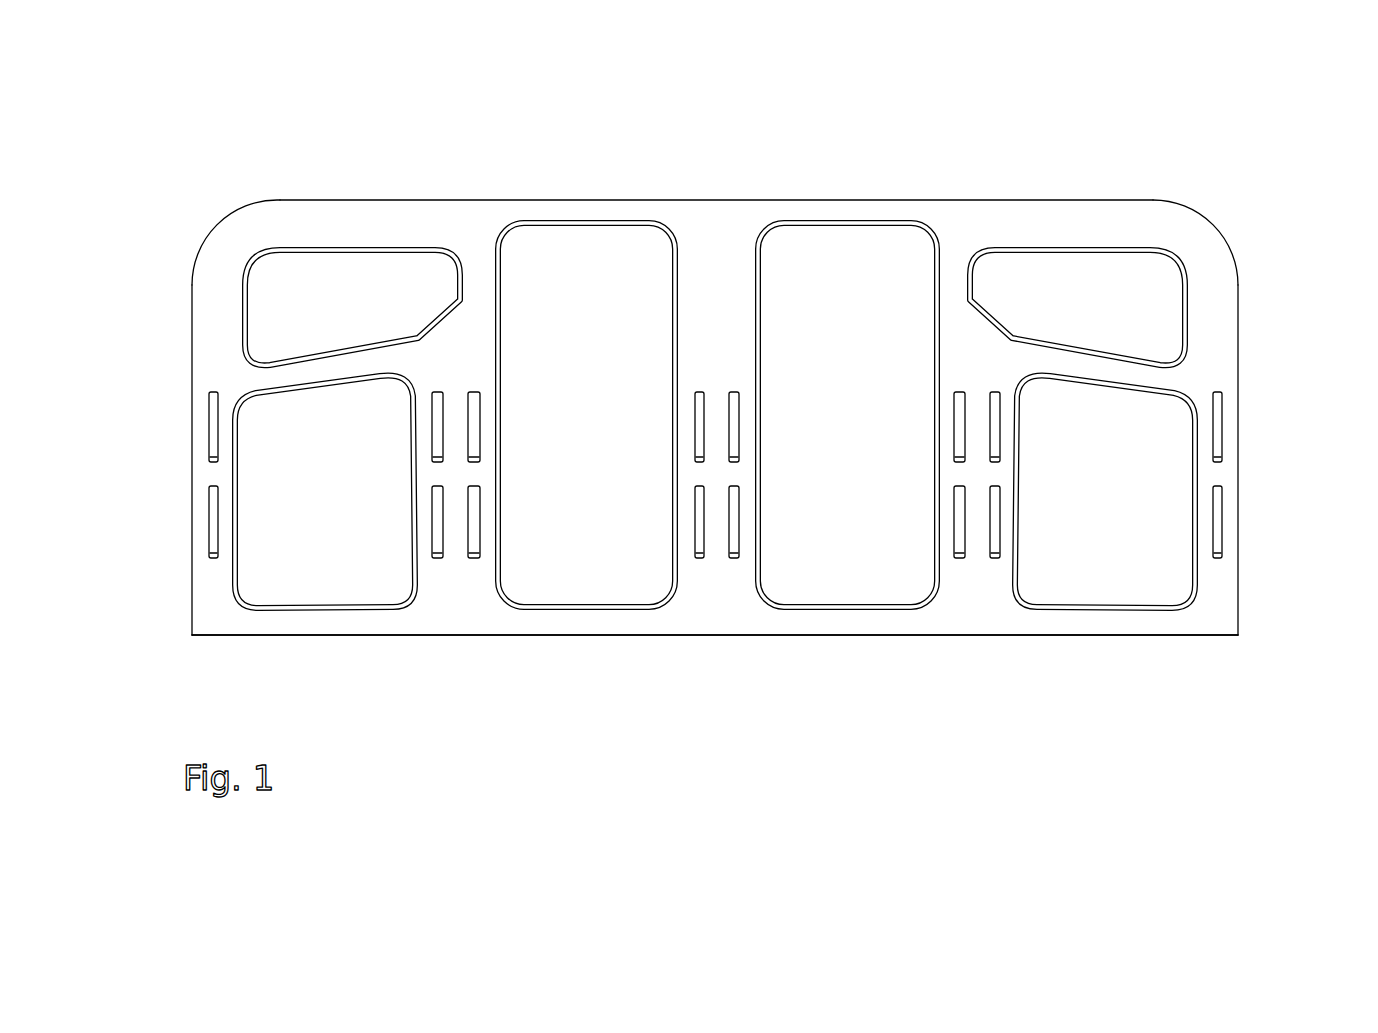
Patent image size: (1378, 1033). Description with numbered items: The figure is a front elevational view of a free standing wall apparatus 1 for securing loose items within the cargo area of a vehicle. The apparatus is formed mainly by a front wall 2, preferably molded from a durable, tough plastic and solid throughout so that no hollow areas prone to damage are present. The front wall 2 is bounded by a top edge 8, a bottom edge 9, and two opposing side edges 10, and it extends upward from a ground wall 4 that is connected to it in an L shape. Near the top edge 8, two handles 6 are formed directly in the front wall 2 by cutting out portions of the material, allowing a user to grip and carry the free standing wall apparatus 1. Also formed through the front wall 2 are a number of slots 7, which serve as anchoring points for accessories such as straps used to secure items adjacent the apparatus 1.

The free standing wall apparatus 1 is at (314, 155).
The front wall 2 is at (717, 240).
The ground wall 4 is at (773, 668).
The handles 6 is at (362, 323).
The slots 7 is at (992, 402).
The top edge 8 is at (650, 198).
The bottom edge 9 is at (668, 636).
The side edges 10 is at (192, 375).